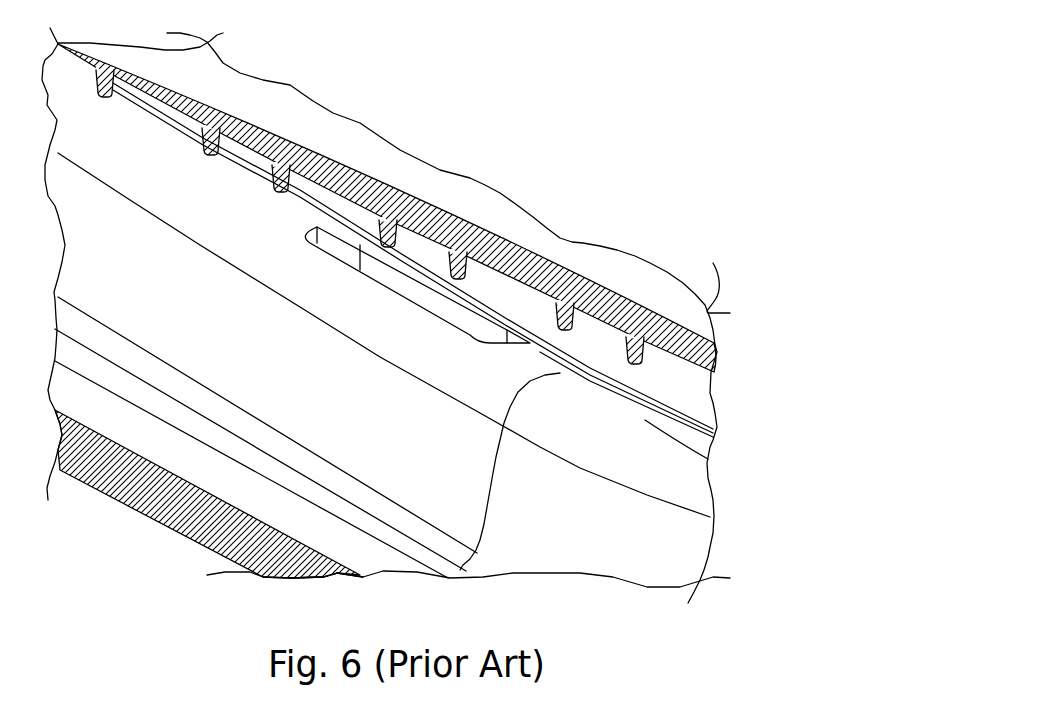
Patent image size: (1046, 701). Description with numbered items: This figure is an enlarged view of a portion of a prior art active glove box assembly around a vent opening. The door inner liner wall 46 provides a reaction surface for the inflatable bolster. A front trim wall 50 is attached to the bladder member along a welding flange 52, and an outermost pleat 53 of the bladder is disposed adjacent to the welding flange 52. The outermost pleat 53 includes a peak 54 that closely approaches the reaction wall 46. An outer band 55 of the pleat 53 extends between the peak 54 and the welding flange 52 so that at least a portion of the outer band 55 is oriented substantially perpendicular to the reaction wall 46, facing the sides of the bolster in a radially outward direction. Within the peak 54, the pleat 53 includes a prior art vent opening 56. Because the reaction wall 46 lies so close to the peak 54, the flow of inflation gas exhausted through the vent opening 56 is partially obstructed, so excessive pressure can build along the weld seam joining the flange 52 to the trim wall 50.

The door inner liner wall 46 is at (303, 113).
The front trim wall 50 is at (126, 500).
The welding flange 52 is at (338, 546).
The outermost pleat 53 is at (614, 542).
The peak 54 is at (708, 459).
The outer band 55 is at (447, 468).
The vent opening 56 is at (480, 323).